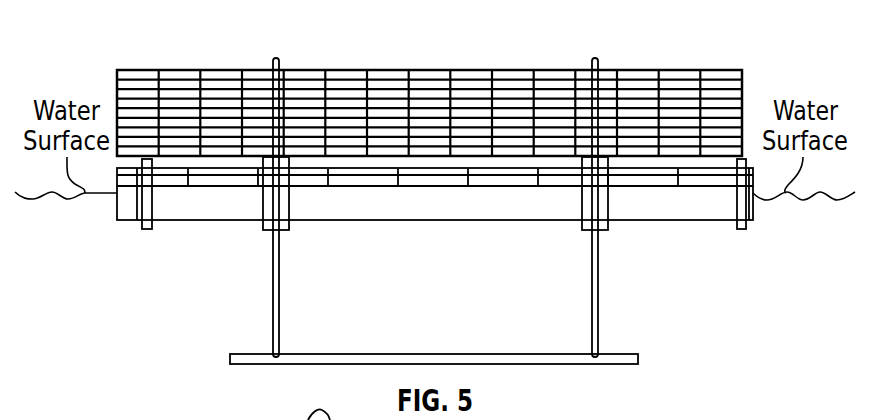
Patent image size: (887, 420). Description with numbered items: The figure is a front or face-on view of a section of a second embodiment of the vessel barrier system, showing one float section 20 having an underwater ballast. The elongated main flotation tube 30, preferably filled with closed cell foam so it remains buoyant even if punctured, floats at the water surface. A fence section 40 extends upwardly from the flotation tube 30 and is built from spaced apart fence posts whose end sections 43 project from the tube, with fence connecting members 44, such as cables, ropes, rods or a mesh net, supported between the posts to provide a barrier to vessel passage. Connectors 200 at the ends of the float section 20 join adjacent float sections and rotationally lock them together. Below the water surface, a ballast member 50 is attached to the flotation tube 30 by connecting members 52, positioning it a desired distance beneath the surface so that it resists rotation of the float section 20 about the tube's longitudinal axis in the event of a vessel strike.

The float section 20 is at (752, 42).
The fence section 40 is at (764, 82).
The fence connecting members 44 is at (117, 80).
The end section 43 is at (273, 60).
The main flotation tube 30 is at (703, 222).
The connectors 200 is at (141, 226).
The connecting members 52 is at (275, 343).
The ballast member 50 is at (634, 358).